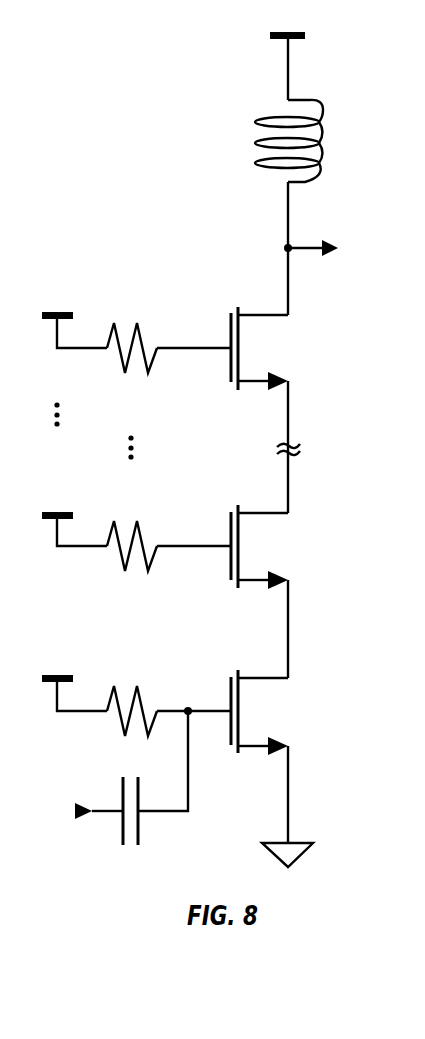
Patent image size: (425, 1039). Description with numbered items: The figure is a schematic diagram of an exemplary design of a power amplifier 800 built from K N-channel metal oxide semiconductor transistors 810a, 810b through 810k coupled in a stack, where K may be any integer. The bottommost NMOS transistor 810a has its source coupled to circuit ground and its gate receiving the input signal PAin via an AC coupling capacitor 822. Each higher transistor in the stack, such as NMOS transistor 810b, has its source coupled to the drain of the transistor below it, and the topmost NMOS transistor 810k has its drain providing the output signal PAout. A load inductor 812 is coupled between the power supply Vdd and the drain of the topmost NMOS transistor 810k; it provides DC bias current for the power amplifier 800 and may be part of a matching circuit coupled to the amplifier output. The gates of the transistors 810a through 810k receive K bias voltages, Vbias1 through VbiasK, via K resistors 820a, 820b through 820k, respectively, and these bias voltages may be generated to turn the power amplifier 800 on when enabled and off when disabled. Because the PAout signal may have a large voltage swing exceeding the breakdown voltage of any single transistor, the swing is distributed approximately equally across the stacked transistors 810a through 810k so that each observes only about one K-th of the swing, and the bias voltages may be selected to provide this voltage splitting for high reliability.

The power amplifier 800 is at (115, 115).
The load inductor 812 is at (320, 92).
The bottommost NMOS transistor 810a is at (229, 693).
The NMOS transistor 810b is at (229, 527).
The topmost NMOS transistor 810k is at (229, 329).
The resistor 820a is at (143, 697).
The resistor 820b is at (143, 531).
The resistor 820k is at (143, 333).
The AC coupling capacitor 822 is at (140, 789).